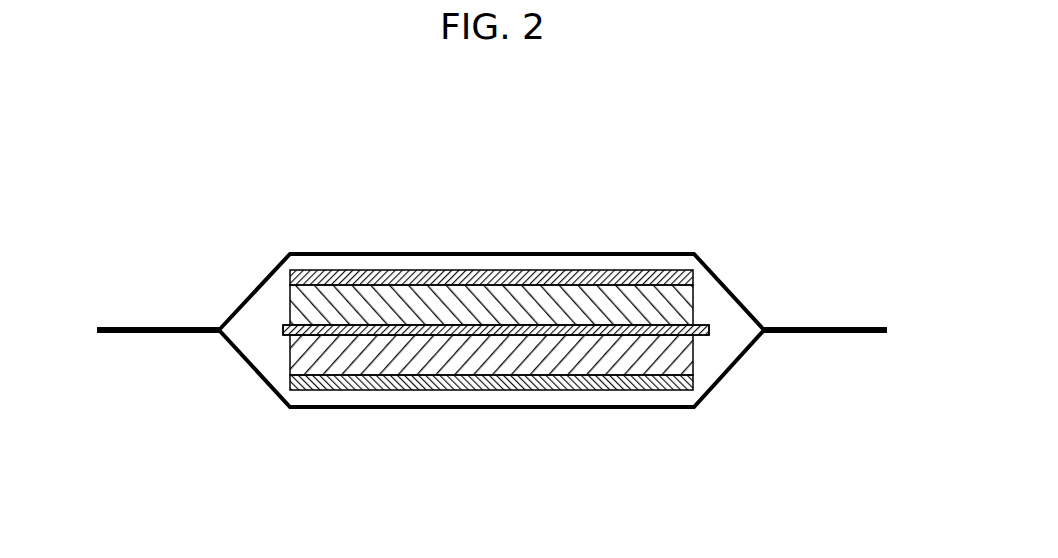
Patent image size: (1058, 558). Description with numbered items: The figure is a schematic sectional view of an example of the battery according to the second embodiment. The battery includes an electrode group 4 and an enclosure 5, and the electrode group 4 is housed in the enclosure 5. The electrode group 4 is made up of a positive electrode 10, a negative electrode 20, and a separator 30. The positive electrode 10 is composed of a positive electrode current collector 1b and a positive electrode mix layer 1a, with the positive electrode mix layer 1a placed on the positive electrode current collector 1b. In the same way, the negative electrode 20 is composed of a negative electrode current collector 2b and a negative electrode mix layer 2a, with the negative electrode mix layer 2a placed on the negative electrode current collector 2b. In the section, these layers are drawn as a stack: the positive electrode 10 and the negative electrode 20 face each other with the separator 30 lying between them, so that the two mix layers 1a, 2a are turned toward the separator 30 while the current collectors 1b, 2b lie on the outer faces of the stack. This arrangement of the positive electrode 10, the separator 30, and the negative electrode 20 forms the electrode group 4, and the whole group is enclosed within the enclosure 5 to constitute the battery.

The electrode group 4 is at (702, 302).
The enclosure 5 is at (161, 334).
The positive electrode 10 is at (430, 489).
The positive electrode mix layer 1a is at (452, 362).
The positive electrode current collector 1b is at (525, 383).
The negative electrode 20 is at (535, 171).
The negative electrode mix layer 2a is at (450, 302).
The negative electrode current collector 2b is at (523, 282).
The separator 30 is at (611, 331).